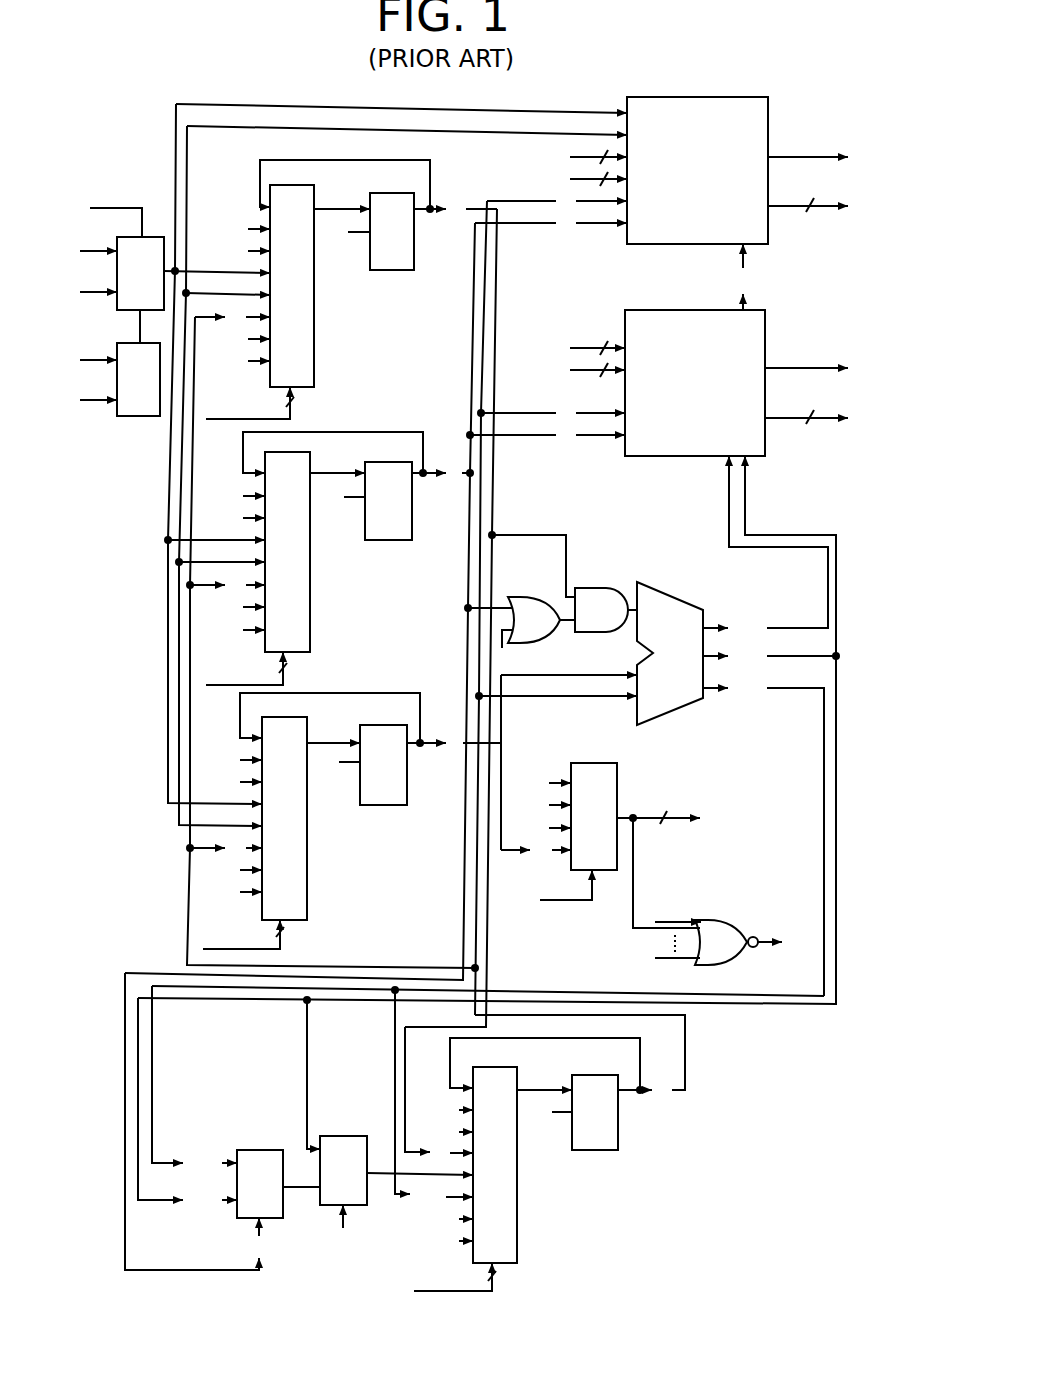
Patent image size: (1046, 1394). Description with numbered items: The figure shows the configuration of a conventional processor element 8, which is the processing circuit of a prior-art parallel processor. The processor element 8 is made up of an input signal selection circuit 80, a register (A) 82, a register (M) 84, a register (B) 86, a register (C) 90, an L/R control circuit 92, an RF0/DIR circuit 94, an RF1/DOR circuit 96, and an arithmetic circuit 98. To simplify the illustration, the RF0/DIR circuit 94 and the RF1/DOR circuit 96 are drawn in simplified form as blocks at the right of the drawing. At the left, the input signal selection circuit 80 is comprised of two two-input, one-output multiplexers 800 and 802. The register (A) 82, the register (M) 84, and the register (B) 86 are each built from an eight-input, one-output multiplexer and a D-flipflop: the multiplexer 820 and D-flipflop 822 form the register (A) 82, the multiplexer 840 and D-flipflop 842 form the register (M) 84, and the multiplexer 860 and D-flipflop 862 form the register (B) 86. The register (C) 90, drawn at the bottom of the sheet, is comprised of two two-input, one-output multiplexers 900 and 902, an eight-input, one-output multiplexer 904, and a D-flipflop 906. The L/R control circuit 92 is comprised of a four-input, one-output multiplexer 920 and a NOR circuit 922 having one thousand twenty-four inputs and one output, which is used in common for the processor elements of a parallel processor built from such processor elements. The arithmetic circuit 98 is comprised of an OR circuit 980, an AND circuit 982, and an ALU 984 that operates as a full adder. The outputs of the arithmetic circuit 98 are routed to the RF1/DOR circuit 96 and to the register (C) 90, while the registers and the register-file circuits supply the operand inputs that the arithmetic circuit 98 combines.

The processor element 8 is at (452, 694).
The input signal selection circuit 80 is at (163, 358).
The multiplexer 800 is at (117, 306).
The multiplexer 802 is at (117, 412).
The register (A) 82 is at (346, 289).
The multiplexer 820 is at (316, 322).
The D-flipflop 822 is at (392, 270).
The register (M) 84 is at (338, 557).
The multiplexer 840 is at (312, 590).
The D-flipflop 842 is at (388, 540).
The register (B) 86 is at (352, 821).
The multiplexer 860 is at (309, 853).
The D-flipflop 862 is at (383, 805).
The register (C) 90 is at (405, 1132).
The multiplexer 900 is at (240, 1218).
The multiplexer 902 is at (327, 1206).
The multiplexer 904 is at (519, 1203).
The D-flipflop 906 is at (600, 1150).
The L/R control circuit 92 is at (654, 855).
The multiplexer 920 is at (617, 765).
The NOR circuit 922 is at (726, 919).
The RF0/DIR circuit 94 is at (629, 244).
The RF1/DOR circuit 96 is at (629, 456).
The arithmetic circuit 98 is at (653, 726).
The OR circuit 980 is at (532, 598).
The AND circuit 982 is at (610, 588).
The ALU 984 is at (658, 590).